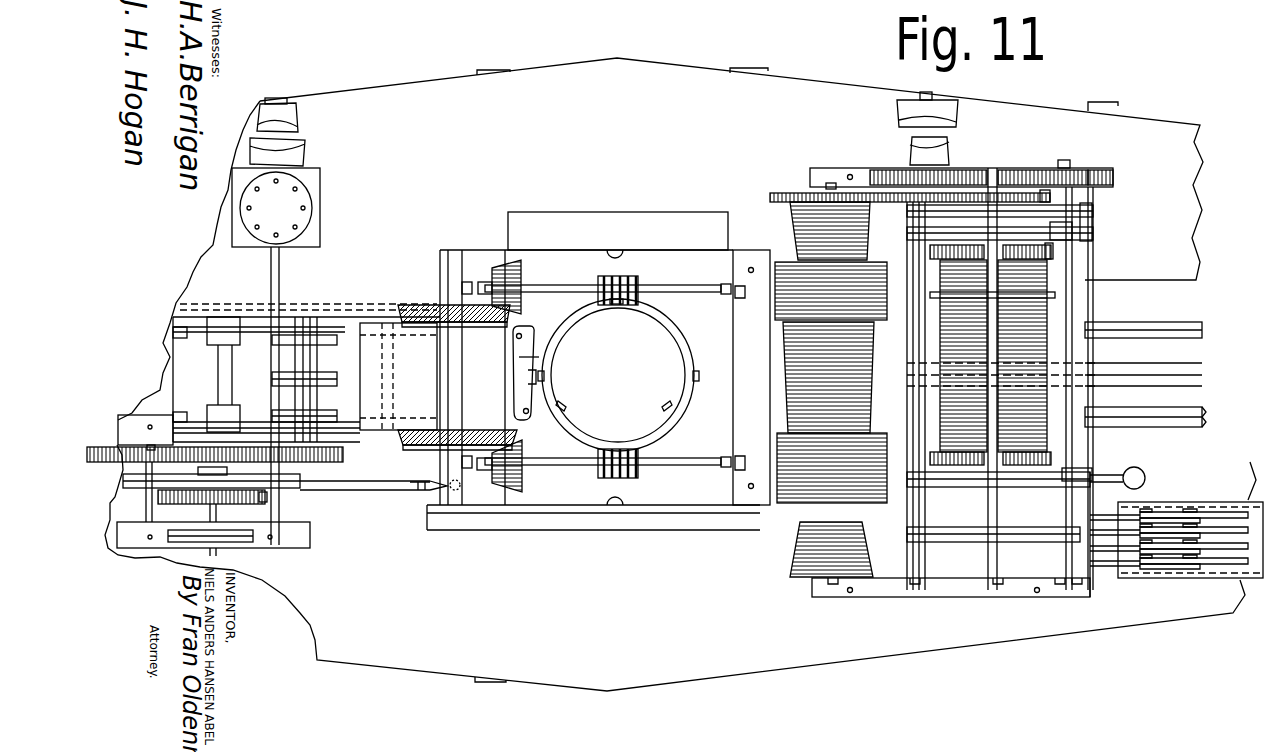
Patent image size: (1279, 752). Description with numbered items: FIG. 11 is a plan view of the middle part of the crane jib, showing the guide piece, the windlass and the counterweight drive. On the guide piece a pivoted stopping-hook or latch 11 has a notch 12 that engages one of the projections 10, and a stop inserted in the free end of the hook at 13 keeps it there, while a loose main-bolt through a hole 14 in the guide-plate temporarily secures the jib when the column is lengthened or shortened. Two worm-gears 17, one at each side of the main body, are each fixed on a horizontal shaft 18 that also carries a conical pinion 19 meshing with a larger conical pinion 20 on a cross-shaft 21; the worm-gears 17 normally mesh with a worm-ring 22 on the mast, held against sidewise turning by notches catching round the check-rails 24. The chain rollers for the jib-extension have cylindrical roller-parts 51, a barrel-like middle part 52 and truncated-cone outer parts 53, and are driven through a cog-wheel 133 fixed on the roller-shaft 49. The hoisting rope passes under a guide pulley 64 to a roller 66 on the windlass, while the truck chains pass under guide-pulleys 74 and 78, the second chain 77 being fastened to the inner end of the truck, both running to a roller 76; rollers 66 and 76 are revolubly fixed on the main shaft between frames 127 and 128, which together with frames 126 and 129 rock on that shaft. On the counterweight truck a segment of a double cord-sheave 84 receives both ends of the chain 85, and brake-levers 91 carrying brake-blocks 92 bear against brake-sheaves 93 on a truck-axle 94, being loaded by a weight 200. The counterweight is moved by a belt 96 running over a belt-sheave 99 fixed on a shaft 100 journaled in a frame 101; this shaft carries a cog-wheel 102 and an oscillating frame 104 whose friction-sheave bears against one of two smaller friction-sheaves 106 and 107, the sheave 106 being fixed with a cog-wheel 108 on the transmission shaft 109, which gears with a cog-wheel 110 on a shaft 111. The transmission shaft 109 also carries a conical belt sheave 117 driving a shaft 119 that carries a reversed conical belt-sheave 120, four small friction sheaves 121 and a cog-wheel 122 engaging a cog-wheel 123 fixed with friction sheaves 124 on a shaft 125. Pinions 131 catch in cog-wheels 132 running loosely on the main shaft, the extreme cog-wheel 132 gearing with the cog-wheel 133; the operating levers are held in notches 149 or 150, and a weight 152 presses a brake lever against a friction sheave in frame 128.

The projections 10 is at (545, 378).
The stopping-hook or latch 11 is at (550, 358).
The notch 12 is at (528, 376).
The free end of the hook 13 is at (527, 323).
The hole 14 is at (750, 369).
The worm-gears 17 is at (635, 270).
The horizontal shaft 18 is at (683, 290).
The conical pinion 19 is at (507, 268).
The larger conical pinions 20 is at (492, 322).
The vertical shaft 21 is at (455, 363).
The worm-ring 22 is at (560, 425).
The check-rails 24 is at (617, 305).
The roller-shaft 49 is at (828, 170).
The roller-parts 51 is at (778, 295).
The middle part of the roller 52 is at (785, 385).
The outer parts of the roller 53 is at (795, 214).
The guide pulley 64 is at (915, 388).
The roller 66 is at (1000, 332).
The guide-pulley 74 is at (986, 373).
The roller 76 is at (1020, 285).
The second chain, rope or the like 77 is at (1145, 374).
The guide pulley 78 is at (935, 362).
The segment of a double cord-sheave 84 is at (318, 373).
The chain or rope 85 is at (155, 412).
The brake-lever 91 is at (325, 318).
The brake-block 92 is at (216, 340).
The brake-sheaves 93 is at (240, 375).
The truck-axle 94 is at (232, 386).
The belt, line or the like 96 is at (135, 530).
The second belt-sheave 99 is at (235, 545).
The shaft 100 is at (226, 508).
The frame 101 is at (130, 420).
The cog-wheel 102 is at (268, 500).
The frame 104 is at (205, 495).
The friction-sheave 106 is at (300, 490).
The friction-sheave 107 is at (123, 483).
The cog-wheel 108 is at (338, 460).
The transmission shaft 109 is at (272, 280).
The cog-wheel 110 is at (118, 435).
The shaft 111 is at (150, 540).
The conical belt sheave 117 is at (300, 152).
The shaft 119 is at (990, 168).
The conical belt-sheave 120 is at (908, 118).
The small friction sheaves 121 is at (912, 212).
The cog-wheel 122 is at (892, 172).
The cog-wheel 123 is at (1098, 172).
The friction sheaves 124 is at (1060, 212).
The shaft 125 is at (1063, 160).
The frame 126 is at (1012, 222).
The frame 127 is at (1060, 238).
The frame 128 is at (1150, 464).
The frame 129 is at (985, 505).
The pinion 131 is at (980, 245).
The cog-wheels 132 is at (1050, 198).
The cog-wheel 133 is at (770, 196).
The notches 149 is at (1190, 510).
The notches 150 is at (1160, 497).
The weight 152 is at (1155, 475).
The weight 200 is at (399, 376).